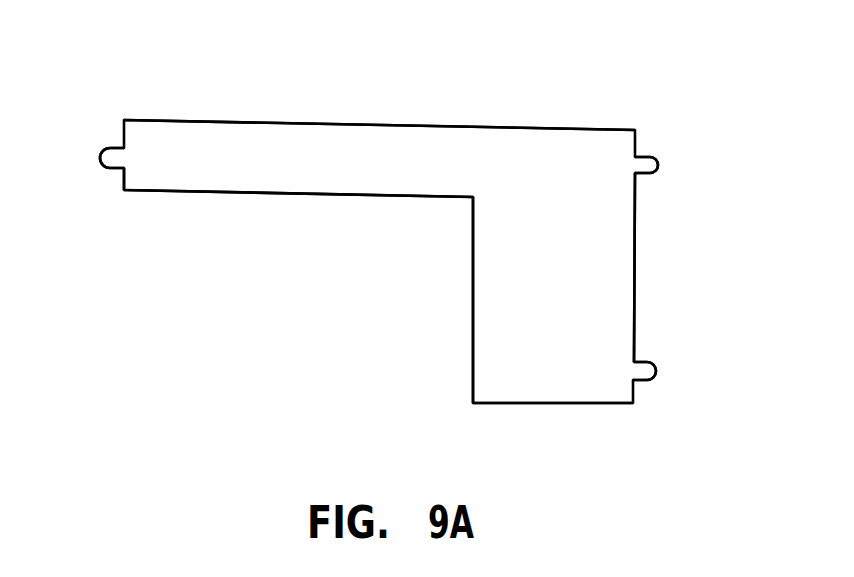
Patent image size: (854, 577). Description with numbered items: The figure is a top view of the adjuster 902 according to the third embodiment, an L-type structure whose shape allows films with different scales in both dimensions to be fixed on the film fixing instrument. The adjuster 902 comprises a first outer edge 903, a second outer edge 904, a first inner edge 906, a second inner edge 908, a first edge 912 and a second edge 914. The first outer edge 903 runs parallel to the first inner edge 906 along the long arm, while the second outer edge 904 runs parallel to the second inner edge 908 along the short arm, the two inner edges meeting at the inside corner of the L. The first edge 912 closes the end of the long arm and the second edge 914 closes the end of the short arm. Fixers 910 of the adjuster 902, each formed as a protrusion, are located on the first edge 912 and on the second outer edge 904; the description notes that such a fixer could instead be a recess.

The adjuster 902 is at (727, 30).
The first outer edge 903 is at (287, 123).
The second outer edge 904 is at (634, 235).
The first inner edge 906 is at (295, 197).
The second inner edge 908 is at (472, 293).
The fixer 910 is at (100, 150).
The first edge 912 is at (120, 178).
The second edge 914 is at (553, 403).